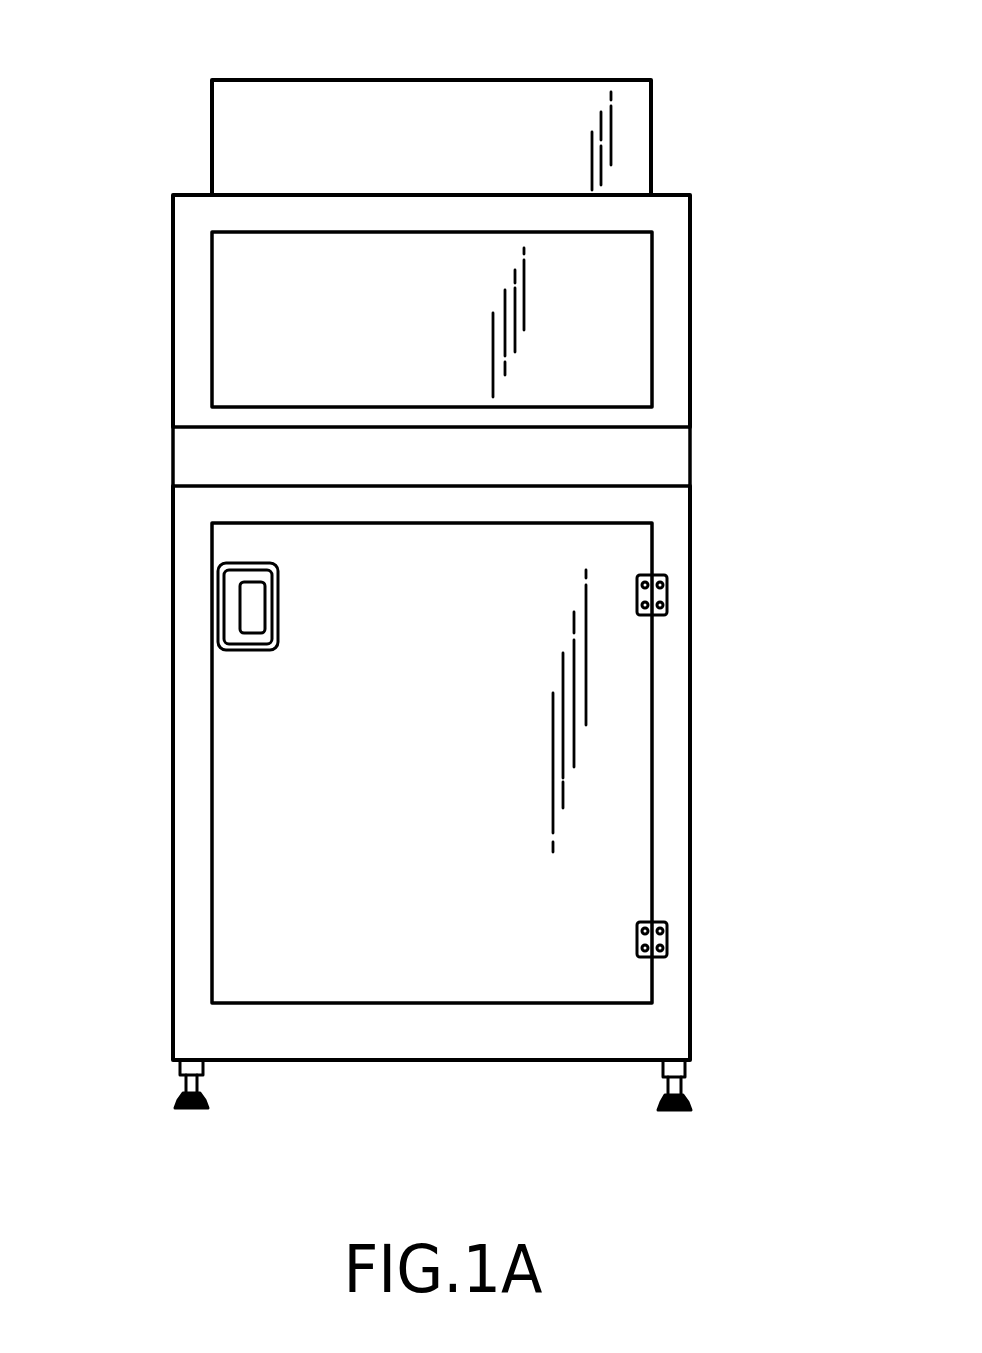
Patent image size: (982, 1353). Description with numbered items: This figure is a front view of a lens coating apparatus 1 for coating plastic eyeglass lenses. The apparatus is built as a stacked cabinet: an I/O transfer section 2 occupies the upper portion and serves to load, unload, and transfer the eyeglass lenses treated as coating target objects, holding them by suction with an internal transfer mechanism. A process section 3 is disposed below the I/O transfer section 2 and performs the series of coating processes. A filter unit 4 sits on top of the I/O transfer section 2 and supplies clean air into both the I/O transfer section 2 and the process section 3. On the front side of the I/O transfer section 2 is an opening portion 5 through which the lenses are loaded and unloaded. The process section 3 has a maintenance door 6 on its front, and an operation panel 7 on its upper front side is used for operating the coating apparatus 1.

The coating apparatus 1 is at (686, 92).
The I/O transfer section 2 is at (672, 320).
The process section 3 is at (673, 812).
The filter unit 4 is at (630, 140).
The opening portion 5 is at (232, 322).
The maintenance door 6 is at (233, 812).
The operation panel 7 is at (213, 460).